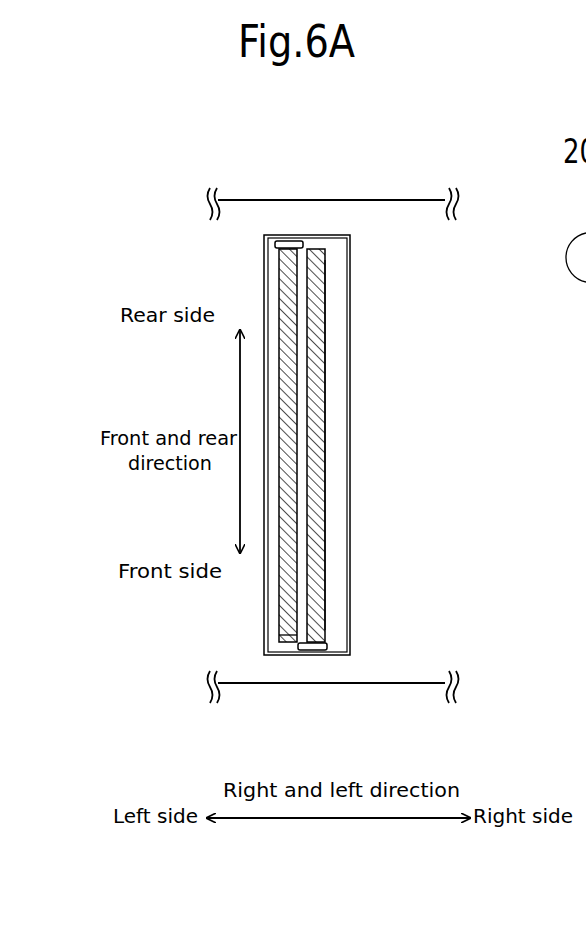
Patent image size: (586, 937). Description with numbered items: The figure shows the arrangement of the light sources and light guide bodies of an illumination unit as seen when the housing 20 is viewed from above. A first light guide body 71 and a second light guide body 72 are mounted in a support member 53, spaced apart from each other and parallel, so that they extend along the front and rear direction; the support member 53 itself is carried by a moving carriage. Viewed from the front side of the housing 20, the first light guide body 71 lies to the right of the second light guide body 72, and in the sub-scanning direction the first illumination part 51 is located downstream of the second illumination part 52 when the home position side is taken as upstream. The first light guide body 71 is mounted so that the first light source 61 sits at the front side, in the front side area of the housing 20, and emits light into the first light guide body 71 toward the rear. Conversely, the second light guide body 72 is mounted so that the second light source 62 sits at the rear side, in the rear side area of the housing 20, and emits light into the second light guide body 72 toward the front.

The housing 20 is at (360, 200).
The first illumination part 51 is at (317, 415).
The second illumination part 52 is at (288, 360).
The support member 53 is at (350, 483).
The first light source 61 is at (327, 647).
The second light source 62 is at (303, 245).
The first light guide body 71 is at (325, 545).
The second light guide body 72 is at (283, 642).